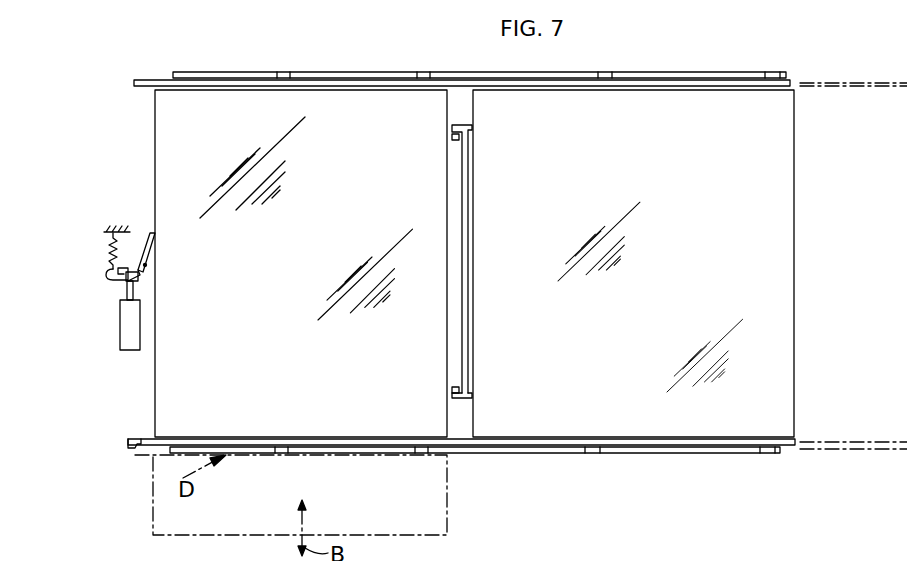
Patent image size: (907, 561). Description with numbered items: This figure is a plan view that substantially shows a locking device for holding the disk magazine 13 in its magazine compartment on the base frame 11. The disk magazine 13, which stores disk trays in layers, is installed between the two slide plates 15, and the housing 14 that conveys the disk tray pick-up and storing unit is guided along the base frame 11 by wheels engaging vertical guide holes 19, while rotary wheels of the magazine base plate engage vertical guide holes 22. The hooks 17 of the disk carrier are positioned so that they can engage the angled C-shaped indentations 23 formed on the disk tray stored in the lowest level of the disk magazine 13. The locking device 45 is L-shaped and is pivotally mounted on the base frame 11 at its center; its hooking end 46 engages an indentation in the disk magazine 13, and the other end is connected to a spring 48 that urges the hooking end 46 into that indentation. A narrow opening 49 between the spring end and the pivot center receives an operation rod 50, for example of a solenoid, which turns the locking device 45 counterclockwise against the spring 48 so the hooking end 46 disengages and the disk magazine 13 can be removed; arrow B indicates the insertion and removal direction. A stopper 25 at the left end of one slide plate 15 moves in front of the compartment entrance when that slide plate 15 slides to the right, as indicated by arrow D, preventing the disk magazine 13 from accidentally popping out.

The base frame 11 is at (501, 262).
The disk magazine 13 is at (172, 148).
The housing 14 is at (782, 231).
The slide plate 15 is at (138, 80).
The hook 17 is at (466, 128).
The vertical guide hole 19 is at (600, 72).
The vertical guide hole 22 is at (292, 64).
The indentation 23 is at (455, 140).
The stopper 25 is at (126, 441).
The locking device 45 is at (138, 278).
The hooking end 46 is at (155, 240).
The spring 48 is at (110, 250).
The narrow opening 49 is at (116, 280).
The operation rod 50 is at (127, 294).